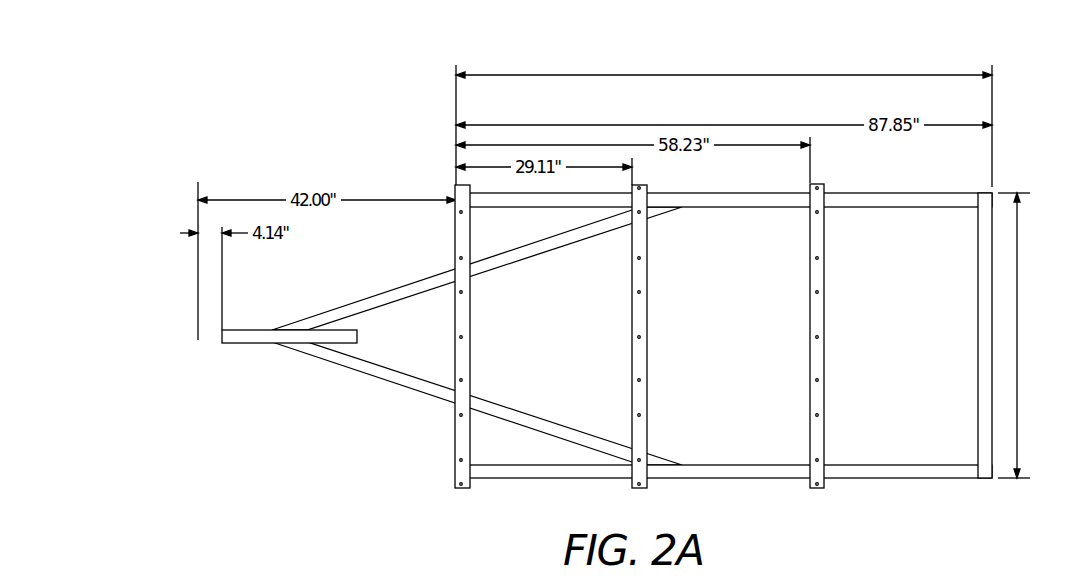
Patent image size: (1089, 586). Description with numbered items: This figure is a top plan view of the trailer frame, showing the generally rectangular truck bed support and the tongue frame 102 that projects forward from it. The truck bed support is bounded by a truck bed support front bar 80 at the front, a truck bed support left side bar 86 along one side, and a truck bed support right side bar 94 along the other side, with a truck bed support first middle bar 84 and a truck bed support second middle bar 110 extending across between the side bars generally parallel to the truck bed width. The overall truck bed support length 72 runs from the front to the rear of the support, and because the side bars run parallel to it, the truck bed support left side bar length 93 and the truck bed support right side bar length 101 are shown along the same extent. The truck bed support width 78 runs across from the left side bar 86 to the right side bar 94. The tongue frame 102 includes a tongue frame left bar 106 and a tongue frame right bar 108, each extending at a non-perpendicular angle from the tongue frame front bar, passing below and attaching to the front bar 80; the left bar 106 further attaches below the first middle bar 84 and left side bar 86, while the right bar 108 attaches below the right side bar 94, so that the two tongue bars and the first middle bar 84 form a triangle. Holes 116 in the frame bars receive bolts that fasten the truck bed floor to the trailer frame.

The truck bed support length 72 is at (724, 276).
The truck bed support left side bar length 93 is at (724, 276).
The truck bed support right side bar length 101 is at (724, 276).
The truck bed support width 78 is at (1018, 328).
The truck bed support front bar 80 is at (468, 340).
The truck bed support first middle bar 84 is at (640, 352).
The truck bed support left side bar 86 is at (722, 470).
The truck bed support right side bar 94 is at (722, 195).
The tongue frame 102 is at (228, 330).
The tongue frame left bar 106 is at (383, 373).
The tongue frame right bar 108 is at (388, 298).
The truck bed support second middle bar 110 is at (818, 355).
The holes 116 is at (467, 380).